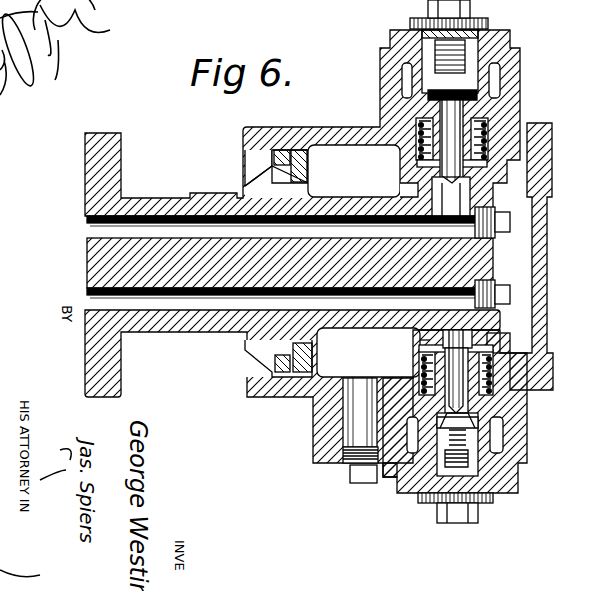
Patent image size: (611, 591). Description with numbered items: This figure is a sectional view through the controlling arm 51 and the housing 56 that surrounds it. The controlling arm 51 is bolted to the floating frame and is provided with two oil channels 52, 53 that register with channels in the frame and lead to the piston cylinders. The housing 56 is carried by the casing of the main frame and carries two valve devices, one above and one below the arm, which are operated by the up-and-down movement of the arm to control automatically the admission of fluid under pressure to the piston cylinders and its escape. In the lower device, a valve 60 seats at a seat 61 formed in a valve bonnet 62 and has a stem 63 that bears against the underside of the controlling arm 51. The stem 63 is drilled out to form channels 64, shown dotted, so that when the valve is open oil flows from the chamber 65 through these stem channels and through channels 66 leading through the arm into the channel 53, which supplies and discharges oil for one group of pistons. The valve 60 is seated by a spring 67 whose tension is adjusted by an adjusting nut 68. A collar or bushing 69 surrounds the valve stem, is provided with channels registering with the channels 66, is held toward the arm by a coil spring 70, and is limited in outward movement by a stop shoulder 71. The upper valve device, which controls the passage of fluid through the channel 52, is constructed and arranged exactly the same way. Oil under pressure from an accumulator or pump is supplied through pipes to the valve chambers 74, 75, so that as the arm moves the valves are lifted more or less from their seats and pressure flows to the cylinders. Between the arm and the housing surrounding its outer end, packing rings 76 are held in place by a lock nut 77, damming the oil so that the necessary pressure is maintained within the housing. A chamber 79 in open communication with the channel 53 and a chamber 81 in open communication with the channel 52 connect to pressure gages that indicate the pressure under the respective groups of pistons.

The controlling arm 51 is at (118, 262).
The oil channel 52 is at (162, 226).
The oil channel 53 is at (188, 300).
The housing 56 is at (327, 137).
The valve 60 is at (482, 427).
The valve seat 61 is at (470, 408).
The valve bonnet 62 is at (525, 458).
The valve stem 63 is at (490, 370).
The channels 64 is at (497, 334).
The chamber 65 is at (492, 383).
The channels 66 is at (441, 290).
The spring 67 is at (522, 474).
The adjusting nut 68 is at (458, 506).
The collar or bushing 69 is at (440, 334).
The coil spring 70 is at (428, 369).
The stop shoulder 71 is at (440, 349).
The valve chamber 74 is at (403, 480).
The valve chamber 75 is at (473, 72).
The packing rings 76 is at (286, 388).
The lock nut 77 is at (314, 347).
The chamber 79 is at (540, 396).
The chamber 81 is at (480, 138).